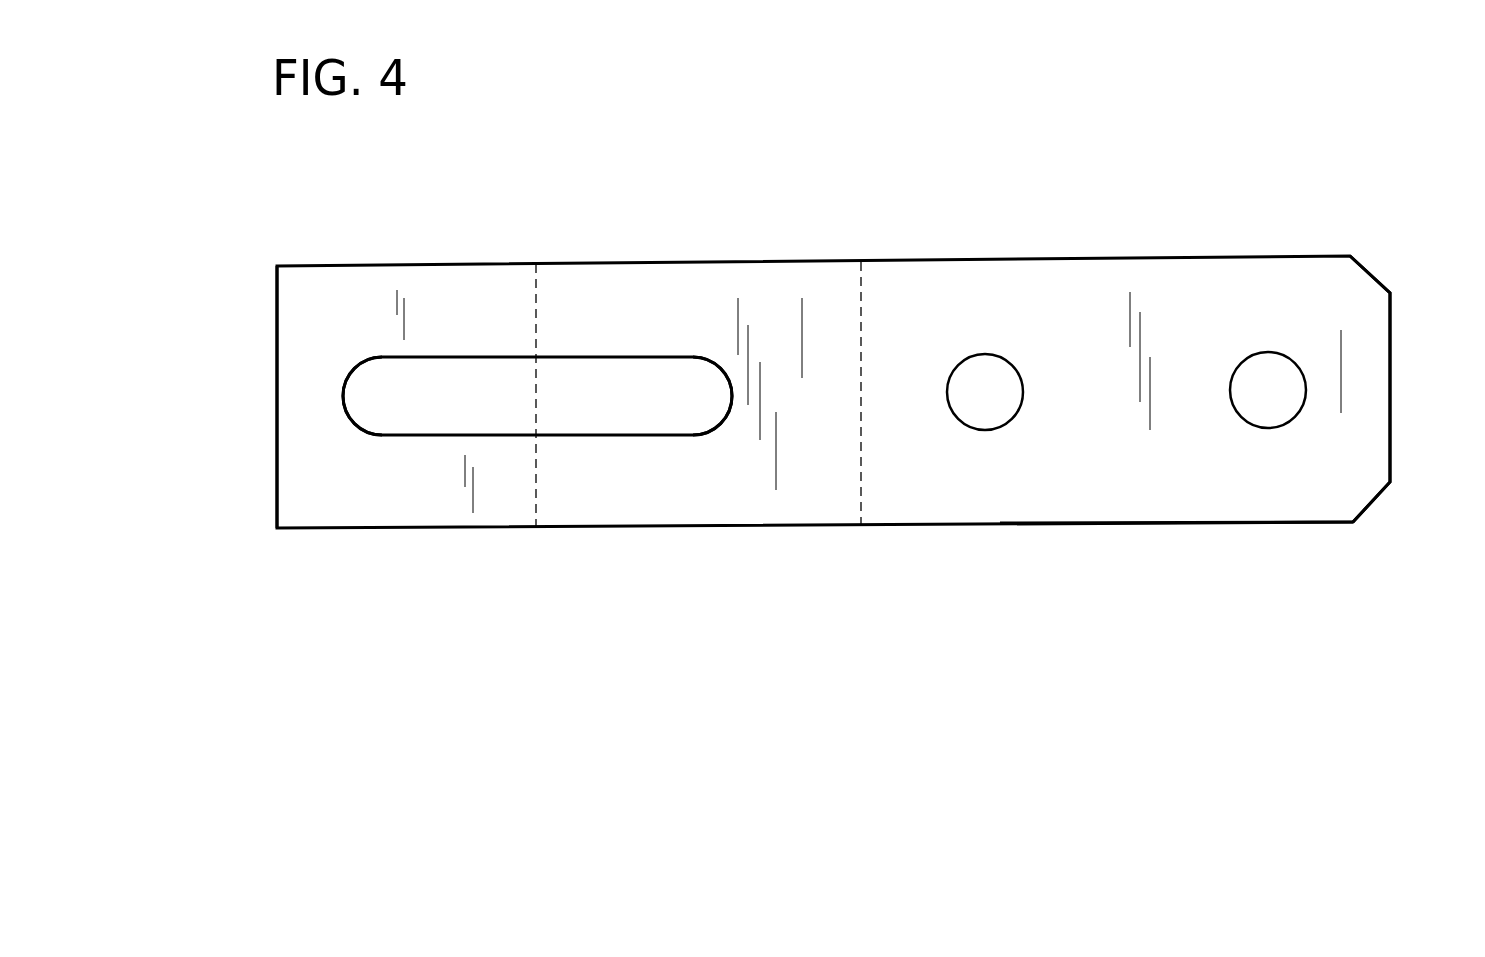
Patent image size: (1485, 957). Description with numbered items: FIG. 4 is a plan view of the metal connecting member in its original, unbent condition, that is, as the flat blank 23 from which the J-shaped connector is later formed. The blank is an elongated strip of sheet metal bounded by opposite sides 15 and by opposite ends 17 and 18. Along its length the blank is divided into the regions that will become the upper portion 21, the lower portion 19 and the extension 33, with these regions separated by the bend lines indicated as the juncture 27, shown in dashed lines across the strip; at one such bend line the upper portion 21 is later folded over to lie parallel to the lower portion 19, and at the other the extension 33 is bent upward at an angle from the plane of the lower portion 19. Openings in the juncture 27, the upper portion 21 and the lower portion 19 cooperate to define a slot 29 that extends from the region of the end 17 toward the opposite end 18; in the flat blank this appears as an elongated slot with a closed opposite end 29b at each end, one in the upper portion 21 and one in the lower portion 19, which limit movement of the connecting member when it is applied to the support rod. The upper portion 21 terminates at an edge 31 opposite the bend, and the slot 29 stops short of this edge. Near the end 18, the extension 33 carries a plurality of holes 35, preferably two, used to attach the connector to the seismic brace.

The opposite sides 15 is at (728, 262).
The end 17 is at (538, 488).
The juncture (bend line) 27 is at (512, 425).
The lower portion 19 is at (790, 500).
The upper portion 21 is at (369, 490).
The flat blank 23 is at (1003, 527).
The slot 29 is at (415, 358).
The closed opposite end 29b is at (357, 365).
The edge 31 is at (277, 370).
The extension 33 is at (1184, 508).
The holes 35 is at (1017, 370).
The opposite end 18 is at (1391, 413).